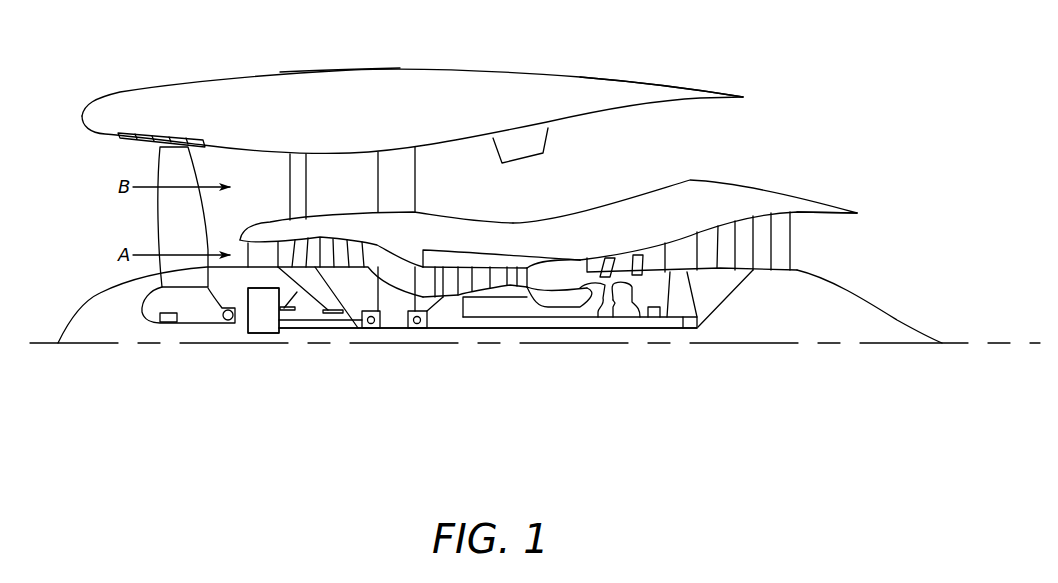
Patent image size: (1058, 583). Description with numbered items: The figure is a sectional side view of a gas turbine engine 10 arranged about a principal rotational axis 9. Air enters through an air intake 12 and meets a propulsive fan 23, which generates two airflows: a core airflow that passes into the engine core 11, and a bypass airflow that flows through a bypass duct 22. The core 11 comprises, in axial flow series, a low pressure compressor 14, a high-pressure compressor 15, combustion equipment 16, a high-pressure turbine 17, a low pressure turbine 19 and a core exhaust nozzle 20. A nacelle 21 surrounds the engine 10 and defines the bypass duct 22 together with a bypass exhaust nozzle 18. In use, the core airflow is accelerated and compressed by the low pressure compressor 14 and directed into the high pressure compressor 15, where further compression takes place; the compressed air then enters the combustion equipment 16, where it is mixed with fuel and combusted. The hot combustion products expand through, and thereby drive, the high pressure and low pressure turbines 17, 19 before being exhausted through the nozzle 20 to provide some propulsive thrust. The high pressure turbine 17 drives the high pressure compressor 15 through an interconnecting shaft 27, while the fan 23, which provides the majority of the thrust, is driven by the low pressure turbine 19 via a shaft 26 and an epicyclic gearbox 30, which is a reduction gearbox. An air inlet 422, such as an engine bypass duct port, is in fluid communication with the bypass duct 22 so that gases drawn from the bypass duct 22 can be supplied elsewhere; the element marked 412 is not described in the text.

The principal rotational axis 9 is at (740, 346).
The gas turbine engine 10 is at (138, 92).
The core 11 is at (560, 235).
The air intake 12 is at (102, 161).
The low pressure compressor 14 is at (335, 245).
The high-pressure compressor 15 is at (482, 278).
The combustion equipment 16 is at (558, 278).
The high-pressure turbine 17 is at (623, 262).
The bypass exhaust nozzle 18 is at (740, 136).
The low pressure turbine 19 is at (760, 230).
The core exhaust nozzle 20 is at (824, 245).
The nacelle 21 is at (393, 82).
The bypass duct 22 is at (688, 150).
The propulsive fan 23 is at (167, 205).
The shaft 26 is at (477, 332).
The interconnecting shaft 27 is at (518, 317).
The epicyclic gearbox 30 is at (262, 323).
The core casing wall 412 is at (445, 228).
The air inlet 422 is at (518, 140).